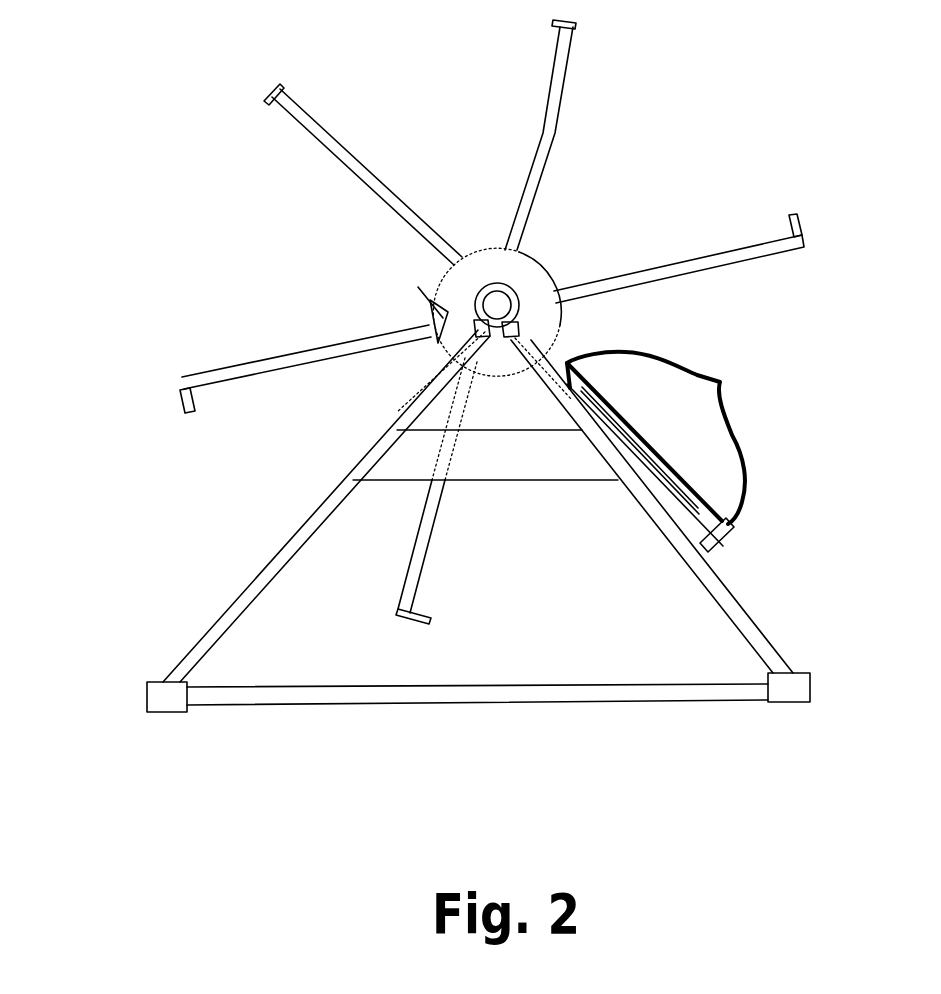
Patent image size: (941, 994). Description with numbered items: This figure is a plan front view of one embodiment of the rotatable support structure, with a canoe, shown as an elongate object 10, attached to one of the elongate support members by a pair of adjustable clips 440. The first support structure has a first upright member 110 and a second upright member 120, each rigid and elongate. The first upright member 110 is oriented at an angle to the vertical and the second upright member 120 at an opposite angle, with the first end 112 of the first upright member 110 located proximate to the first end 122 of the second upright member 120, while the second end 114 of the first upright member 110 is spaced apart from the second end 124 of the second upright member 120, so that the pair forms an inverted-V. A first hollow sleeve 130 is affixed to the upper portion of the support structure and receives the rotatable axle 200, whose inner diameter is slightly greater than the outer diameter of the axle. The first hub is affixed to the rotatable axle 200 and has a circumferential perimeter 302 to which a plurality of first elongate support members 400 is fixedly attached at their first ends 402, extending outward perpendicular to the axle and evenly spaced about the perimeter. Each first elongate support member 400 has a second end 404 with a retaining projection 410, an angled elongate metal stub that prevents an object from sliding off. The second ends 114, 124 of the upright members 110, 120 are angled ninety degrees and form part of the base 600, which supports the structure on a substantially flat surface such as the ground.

The elongate object 10 is at (723, 387).
The first upright member 110 is at (270, 557).
The first end of first upright member 112 is at (475, 323).
The second end of first upright member 114 is at (163, 677).
The second upright member 120 is at (703, 572).
The first end of second upright member 122 is at (520, 332).
The second end of second upright member 124 is at (800, 670).
The first hollow sleeve 130 is at (528, 277).
The rotatable axle 200 is at (497, 305).
The circumferential perimeter 302 is at (472, 250).
The first elongate support member 400 is at (547, 133).
The first end of first elongate support member 402 is at (417, 333).
The second end of first elongate support member 404 is at (187, 378).
The retaining projection 410 is at (263, 100).
The adjustable clip 440 is at (570, 377).
The base 600 is at (578, 705).